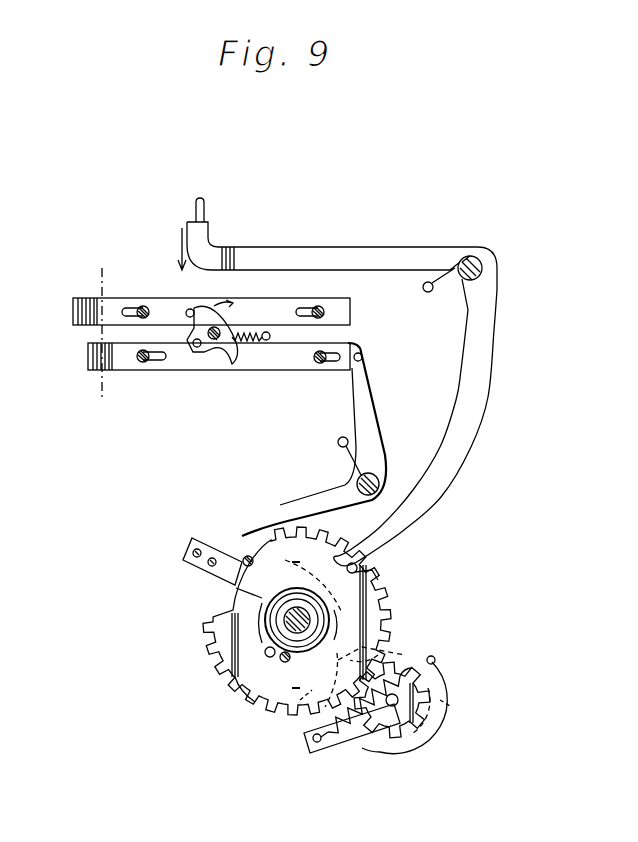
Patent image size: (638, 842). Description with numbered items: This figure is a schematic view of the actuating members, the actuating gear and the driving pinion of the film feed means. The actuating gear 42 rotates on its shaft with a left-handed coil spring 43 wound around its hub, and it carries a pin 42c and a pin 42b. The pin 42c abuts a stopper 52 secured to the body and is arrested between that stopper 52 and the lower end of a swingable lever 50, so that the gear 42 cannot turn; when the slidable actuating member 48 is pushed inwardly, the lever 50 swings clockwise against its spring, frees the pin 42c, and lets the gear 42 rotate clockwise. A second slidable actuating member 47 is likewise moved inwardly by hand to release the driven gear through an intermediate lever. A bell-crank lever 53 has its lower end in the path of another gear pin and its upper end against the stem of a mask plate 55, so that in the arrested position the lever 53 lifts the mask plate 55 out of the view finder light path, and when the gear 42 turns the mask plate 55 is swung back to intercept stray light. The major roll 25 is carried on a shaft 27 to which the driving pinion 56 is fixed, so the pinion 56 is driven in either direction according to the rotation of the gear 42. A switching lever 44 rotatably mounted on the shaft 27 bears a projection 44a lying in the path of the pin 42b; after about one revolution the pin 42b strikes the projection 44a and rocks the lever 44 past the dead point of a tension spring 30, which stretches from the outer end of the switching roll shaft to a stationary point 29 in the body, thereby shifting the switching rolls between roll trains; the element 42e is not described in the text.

The major roll 25 is at (436, 736).
The shaft 27 is at (389, 737).
The stationary point 29 is at (436, 659).
The tension spring 30 is at (336, 752).
The actuating gear 42 is at (230, 668).
The pin 42b is at (300, 704).
The pin 42c is at (232, 548).
The edge 42e is at (238, 592).
The left-handed coil spring 43 is at (308, 594).
The switching lever 44 is at (357, 740).
The projection 44a is at (378, 656).
The actuating member 47 is at (160, 305).
The actuating member 48 is at (186, 373).
The swingable lever 50 is at (381, 426).
The stopper 52 is at (194, 537).
The lever 53 is at (350, 258).
The mask plate 55 is at (196, 214).
The driving pinion 56 is at (444, 710).